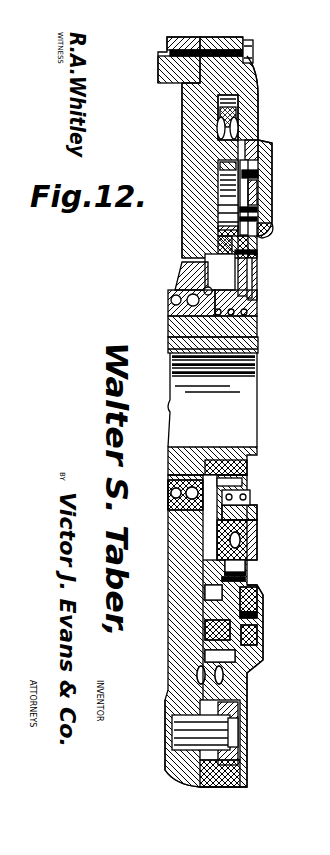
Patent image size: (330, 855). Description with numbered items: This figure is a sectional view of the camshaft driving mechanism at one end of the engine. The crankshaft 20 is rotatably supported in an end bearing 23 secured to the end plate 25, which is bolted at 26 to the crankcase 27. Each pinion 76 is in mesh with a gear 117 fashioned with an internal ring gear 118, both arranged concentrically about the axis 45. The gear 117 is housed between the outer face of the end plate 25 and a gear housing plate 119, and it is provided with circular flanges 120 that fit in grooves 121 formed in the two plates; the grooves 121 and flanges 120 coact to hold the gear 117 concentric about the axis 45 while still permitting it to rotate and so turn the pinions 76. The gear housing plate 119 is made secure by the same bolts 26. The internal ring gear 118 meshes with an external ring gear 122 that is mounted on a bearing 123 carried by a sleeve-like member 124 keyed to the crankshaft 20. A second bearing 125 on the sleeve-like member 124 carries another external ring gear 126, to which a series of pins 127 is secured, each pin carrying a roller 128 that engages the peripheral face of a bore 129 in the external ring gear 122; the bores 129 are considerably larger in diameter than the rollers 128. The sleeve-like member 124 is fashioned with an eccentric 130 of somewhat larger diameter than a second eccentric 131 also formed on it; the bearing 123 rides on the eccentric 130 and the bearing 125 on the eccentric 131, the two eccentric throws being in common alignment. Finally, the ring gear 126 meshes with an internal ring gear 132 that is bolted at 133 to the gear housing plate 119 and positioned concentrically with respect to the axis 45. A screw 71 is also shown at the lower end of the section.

The crankshaft 20 is at (265, 353).
The end bearing 23 is at (178, 313).
The end plate 25 is at (196, 121).
The bolts 26 is at (254, 52).
The crankcase 27 is at (170, 74).
The axis 45 is at (172, 399).
The screw 71 is at (175, 733).
The pinions 76 is at (248, 706).
The gear 117 is at (259, 101).
The internal ring gear 118 is at (228, 174).
The gear housing plate 119 is at (260, 112).
The circular flanges 120 is at (208, 150).
The grooves 121 is at (208, 145).
The external ring gear 122 is at (232, 208).
The bearing 123 is at (205, 290).
The sleeve-like member 124 is at (264, 328).
The second bearing 125 is at (256, 305).
The external ring gear 126 is at (275, 229).
The pins 127 is at (258, 252).
The roller 128 is at (256, 265).
The bore 129 is at (212, 268).
The eccentric 130 is at (208, 535).
The eccentric 131 is at (251, 500).
The internal ring gear 132 is at (265, 210).
The bolts 133 is at (259, 174).